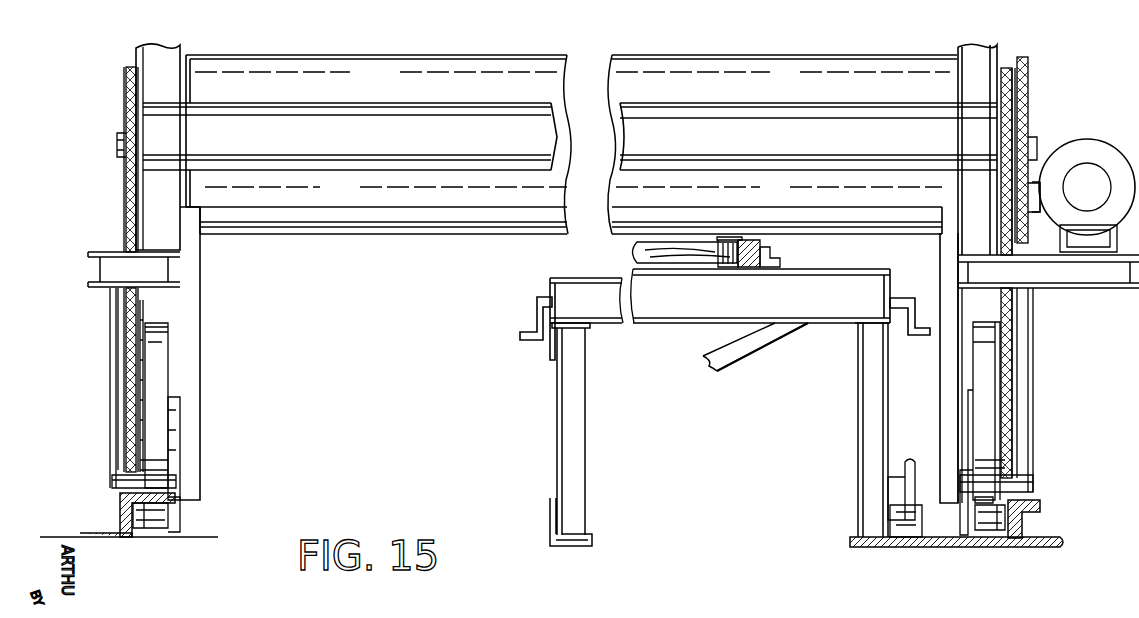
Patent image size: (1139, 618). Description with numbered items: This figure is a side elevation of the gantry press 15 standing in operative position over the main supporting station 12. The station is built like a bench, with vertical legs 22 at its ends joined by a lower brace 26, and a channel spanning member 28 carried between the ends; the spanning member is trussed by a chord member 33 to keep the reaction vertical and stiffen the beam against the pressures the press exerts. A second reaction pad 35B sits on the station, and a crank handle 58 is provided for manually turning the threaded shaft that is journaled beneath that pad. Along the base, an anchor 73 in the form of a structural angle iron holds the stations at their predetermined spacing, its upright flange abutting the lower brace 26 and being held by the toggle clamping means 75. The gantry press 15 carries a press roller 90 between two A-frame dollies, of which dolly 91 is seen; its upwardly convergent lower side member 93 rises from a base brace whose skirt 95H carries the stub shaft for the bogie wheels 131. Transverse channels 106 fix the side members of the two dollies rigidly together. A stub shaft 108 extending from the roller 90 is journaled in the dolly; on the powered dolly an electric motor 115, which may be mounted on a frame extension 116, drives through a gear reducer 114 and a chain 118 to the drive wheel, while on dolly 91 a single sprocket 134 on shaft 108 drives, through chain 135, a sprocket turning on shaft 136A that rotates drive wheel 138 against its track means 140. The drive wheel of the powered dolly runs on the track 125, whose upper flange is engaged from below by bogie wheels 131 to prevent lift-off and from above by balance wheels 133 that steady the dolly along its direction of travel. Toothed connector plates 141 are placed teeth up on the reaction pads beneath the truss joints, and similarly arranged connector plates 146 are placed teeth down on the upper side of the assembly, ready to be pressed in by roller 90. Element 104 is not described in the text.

The main supporting station 12 is at (697, 372).
The gantry press 15 is at (425, 257).
The vertical legs 22 is at (568, 432).
The lower brace 26 is at (868, 542).
The spanning member 28 is at (812, 311).
The chord member 33 is at (755, 346).
The second reaction pad 35B is at (795, 270).
The crank handle 58 is at (538, 318).
The anchor means 73 is at (893, 538).
The clamping means 75 is at (900, 483).
The press roller 90 is at (306, 222).
The dolly 91 is at (160, 62).
The lower side member 93 is at (947, 360).
The skirt 95H is at (960, 517).
The column 104 is at (977, 88).
The channel 106 is at (446, 146).
The stub shaft 108 is at (117, 143).
The gear reducer 114 is at (1048, 232).
The electric motor 115 is at (1080, 145).
The frame extension 116 is at (1105, 277).
The chain 118 is at (1012, 322).
The track 125 is at (1022, 513).
The bogie wheel 131 is at (158, 516).
The balance wheel 133 is at (163, 472).
The sprocket 134 is at (126, 81).
The chain 135 is at (124, 213).
The shaft 136A is at (177, 408).
The drive wheel 138 is at (163, 365).
The track means 140 is at (128, 512).
The connector plate 141 is at (727, 265).
The connector plate 146 is at (752, 238).